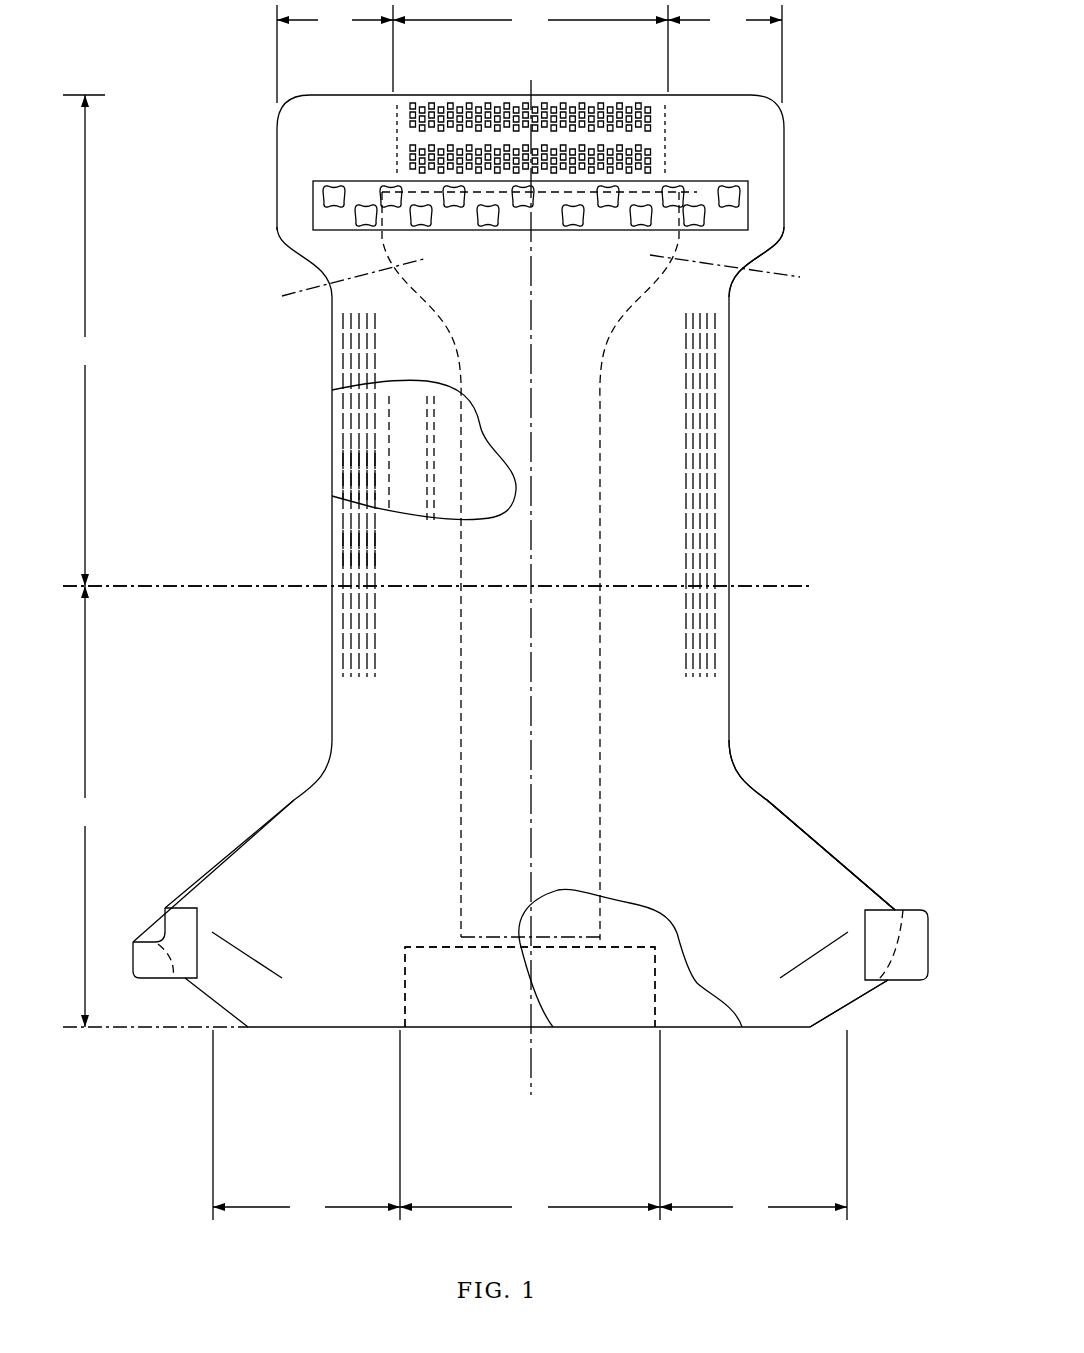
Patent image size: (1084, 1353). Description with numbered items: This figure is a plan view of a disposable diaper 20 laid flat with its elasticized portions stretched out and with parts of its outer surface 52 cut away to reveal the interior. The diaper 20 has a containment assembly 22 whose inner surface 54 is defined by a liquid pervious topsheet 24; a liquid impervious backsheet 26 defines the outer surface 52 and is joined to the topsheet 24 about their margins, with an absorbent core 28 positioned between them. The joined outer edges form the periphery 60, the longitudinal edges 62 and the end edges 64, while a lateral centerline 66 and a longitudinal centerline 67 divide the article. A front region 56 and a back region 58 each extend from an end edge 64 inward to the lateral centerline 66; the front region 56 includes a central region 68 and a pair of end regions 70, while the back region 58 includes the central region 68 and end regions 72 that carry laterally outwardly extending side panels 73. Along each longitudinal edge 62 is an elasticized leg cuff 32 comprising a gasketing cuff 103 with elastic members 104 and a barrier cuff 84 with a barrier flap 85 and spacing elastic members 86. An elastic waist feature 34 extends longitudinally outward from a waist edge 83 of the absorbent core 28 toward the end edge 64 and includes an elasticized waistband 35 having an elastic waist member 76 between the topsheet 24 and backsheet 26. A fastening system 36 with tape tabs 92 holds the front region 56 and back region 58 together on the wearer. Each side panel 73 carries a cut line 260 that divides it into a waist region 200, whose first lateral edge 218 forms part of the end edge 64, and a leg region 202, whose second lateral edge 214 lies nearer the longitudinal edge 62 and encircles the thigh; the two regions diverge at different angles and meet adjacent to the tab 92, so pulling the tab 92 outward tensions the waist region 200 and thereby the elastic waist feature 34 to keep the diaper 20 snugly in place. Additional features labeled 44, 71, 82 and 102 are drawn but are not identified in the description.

The diaper 20 is at (234, 341).
The containment assembly 22 is at (480, 378).
The topsheet 24 is at (507, 442).
The backsheet 26 is at (647, 357).
The absorbent core 28 is at (473, 488).
The elasticized leg cuffs 32 is at (355, 469).
The elastic waist feature 34 is at (553, 140).
The elasticized waistband 35 is at (605, 138).
The fastening system 36 is at (182, 923).
The landing zone 44 is at (327, 221).
The outer surface 52 is at (695, 702).
The inner surface 54 is at (738, 763).
The front region 56 is at (84, 340).
The back region 58 is at (155, 806).
The periphery 60 is at (320, 763).
The longitudinal edges 62 is at (332, 653).
The end edges 64 is at (498, 95).
The lateral centerline 66 is at (217, 582).
The longitudinal centerline 67 is at (533, 1050).
The central region 68 is at (530, 612).
The end regions 70 is at (529, 20).
The ears 71 is at (300, 128).
The end regions 72 is at (530, 1125).
The side panels 73 is at (240, 873).
The elastic waist member 76 is at (615, 993).
The barrier cuffs 82 is at (461, 506).
The waist edges 83 is at (437, 193).
The barrier cuff 84 is at (374, 398).
The barrier flap 85 is at (410, 424).
The spacing elastic members 86 is at (427, 470).
The tape tabs 92 is at (167, 970).
The waist line 102 is at (540, 282).
The gasketing cuff 103 is at (361, 548).
The elastic members 104 is at (351, 500).
The waist region 200 is at (210, 985).
The leg region 202 is at (312, 865).
The second lateral edge 214 is at (765, 793).
The first lateral edge 218 is at (867, 990).
The cut line 260 is at (267, 972).